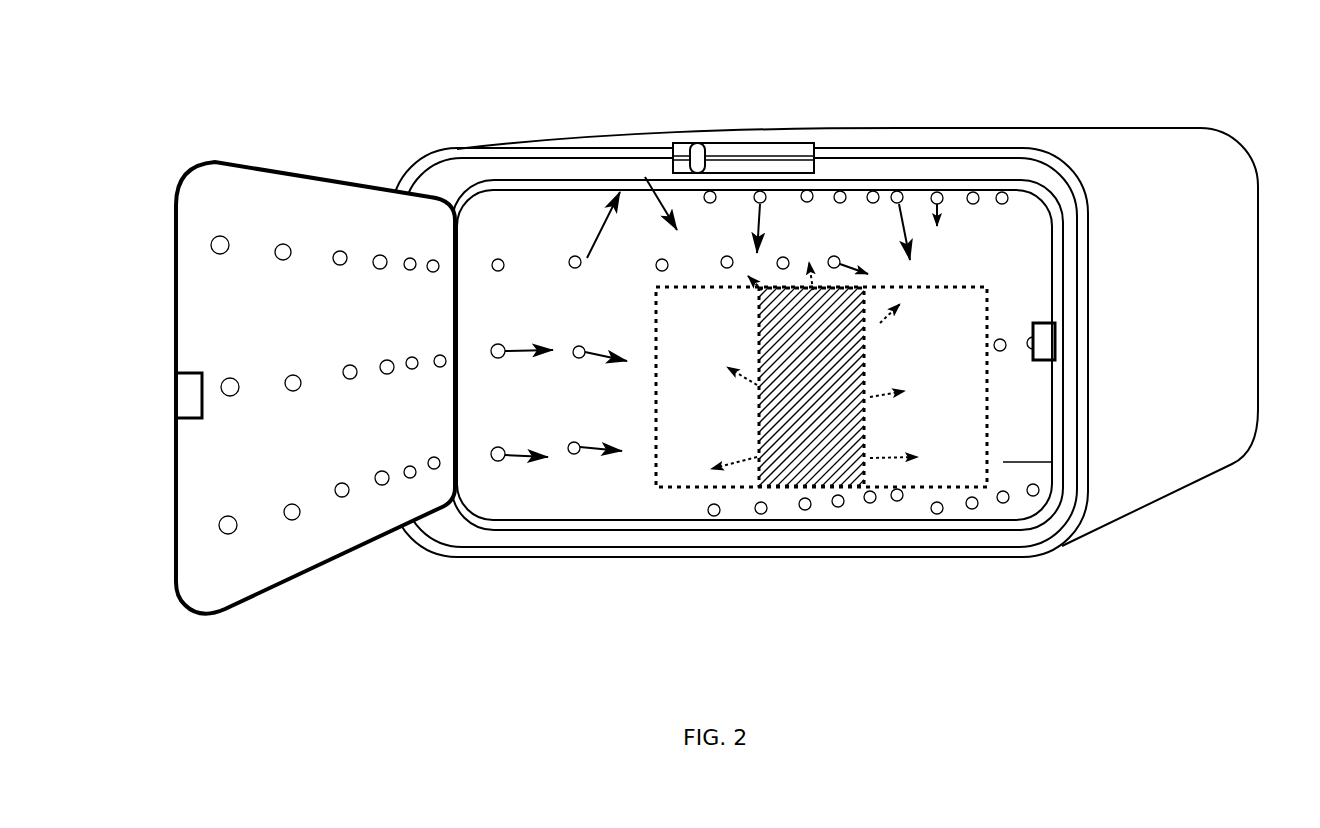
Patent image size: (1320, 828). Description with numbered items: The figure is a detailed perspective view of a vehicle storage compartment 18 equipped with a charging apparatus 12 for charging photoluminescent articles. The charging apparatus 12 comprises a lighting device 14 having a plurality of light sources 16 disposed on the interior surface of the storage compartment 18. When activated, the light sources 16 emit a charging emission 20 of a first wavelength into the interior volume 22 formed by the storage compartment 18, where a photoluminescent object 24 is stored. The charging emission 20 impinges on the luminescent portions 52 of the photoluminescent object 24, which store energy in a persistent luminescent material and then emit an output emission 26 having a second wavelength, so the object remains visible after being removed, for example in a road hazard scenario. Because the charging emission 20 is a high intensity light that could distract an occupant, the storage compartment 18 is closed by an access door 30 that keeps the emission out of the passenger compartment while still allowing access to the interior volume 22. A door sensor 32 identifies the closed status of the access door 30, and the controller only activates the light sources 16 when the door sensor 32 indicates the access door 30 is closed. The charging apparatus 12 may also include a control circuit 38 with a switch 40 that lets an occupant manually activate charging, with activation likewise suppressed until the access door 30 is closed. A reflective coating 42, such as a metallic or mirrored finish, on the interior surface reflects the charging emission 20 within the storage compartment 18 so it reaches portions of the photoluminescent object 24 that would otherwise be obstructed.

The charging apparatus 12 is at (1116, 109).
The lighting device 14 is at (726, 398).
The light sources 16 is at (222, 518).
The storage compartment 18 is at (726, 398).
The charging emission 20 is at (760, 200).
The interior volume 22 is at (940, 185).
The photoluminescent object 24 is at (692, 472).
The output emission 26 is at (817, 297).
The access door 30 is at (205, 160).
The door sensor 32 is at (1043, 343).
The control circuit 38 is at (753, 143).
The switch 40 is at (698, 143).
The reflective coating 42 is at (520, 532).
The luminescent portion 52 is at (793, 472).